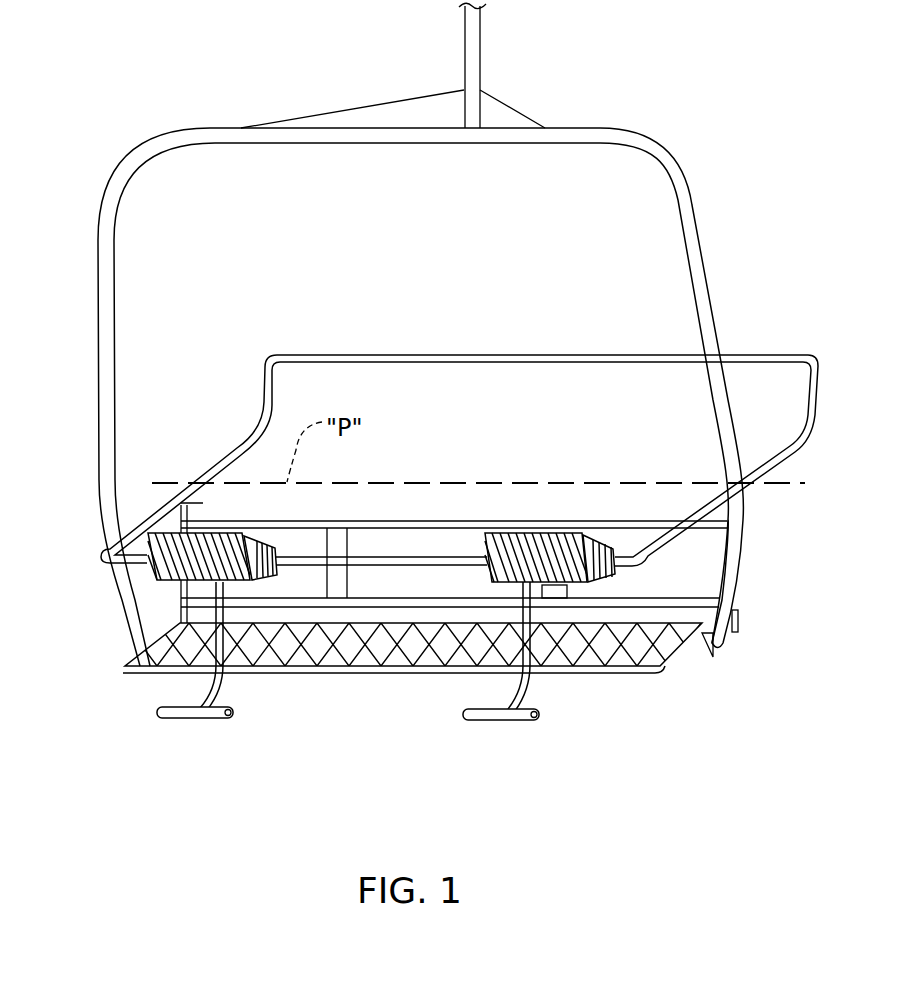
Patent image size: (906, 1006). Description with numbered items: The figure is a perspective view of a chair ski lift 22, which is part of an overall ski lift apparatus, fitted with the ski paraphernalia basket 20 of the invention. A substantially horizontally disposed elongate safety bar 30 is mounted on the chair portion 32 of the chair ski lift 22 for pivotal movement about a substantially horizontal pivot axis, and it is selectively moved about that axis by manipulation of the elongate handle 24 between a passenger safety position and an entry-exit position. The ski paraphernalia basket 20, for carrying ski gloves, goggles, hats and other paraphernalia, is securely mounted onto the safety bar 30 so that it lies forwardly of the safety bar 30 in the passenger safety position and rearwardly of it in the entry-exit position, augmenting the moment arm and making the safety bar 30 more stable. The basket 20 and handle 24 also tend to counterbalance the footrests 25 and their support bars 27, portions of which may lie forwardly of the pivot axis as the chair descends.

The chair ski lift 22 is at (102, 108).
The elongate handle 24 is at (444, 355).
The ski paraphernalia basket 20 is at (221, 532).
The safety bar 30 is at (389, 565).
The support bar 27 is at (220, 692).
The footrest 25 is at (182, 719).
The chair portion 32 is at (588, 662).